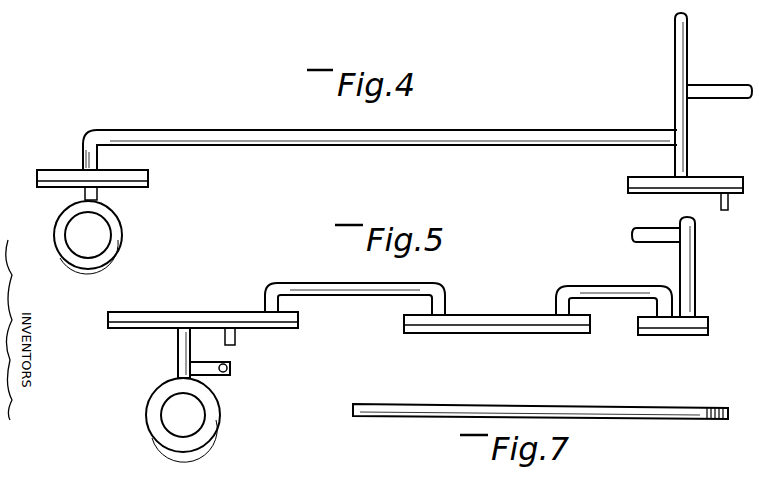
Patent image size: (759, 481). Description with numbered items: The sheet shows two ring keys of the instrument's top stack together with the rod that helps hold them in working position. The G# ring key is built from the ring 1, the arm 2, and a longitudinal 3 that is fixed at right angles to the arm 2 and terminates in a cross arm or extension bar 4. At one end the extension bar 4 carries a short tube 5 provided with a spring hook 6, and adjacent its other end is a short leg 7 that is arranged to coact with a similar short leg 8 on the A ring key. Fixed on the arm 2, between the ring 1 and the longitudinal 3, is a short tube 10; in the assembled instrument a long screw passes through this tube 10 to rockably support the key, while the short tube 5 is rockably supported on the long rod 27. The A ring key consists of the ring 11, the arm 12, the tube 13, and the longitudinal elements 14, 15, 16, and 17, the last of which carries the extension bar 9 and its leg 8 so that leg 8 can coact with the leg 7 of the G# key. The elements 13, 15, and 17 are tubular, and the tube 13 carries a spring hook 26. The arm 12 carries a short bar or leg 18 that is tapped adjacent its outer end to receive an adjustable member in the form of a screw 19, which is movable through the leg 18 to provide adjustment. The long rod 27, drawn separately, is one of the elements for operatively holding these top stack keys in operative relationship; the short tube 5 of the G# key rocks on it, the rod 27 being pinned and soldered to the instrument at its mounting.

In FIG. 4, the ring 1 is at (121, 243).
In FIG. 4, the arm 2 is at (84, 158).
In FIG. 4, the longitudinal 3 is at (340, 140).
In FIG. 4, the cross arm or extension bar 4 is at (680, 52).
In FIG. 4, the short tube 5 is at (717, 182).
In FIG. 4, the spring hook 6 is at (725, 209).
In FIG. 4, the short leg 7 is at (707, 89).
In FIG. 5, the short leg 8 is at (645, 233).
In FIG. 5, the extension bar 9 is at (696, 279).
In FIG. 4, the short tube 10 is at (49, 187).
In FIG. 5, the ring 11 is at (214, 436).
In FIG. 5, the arm 12 is at (178, 355).
In FIG. 5, the tube 13 is at (203, 305).
In FIG. 5, the longitudinal element 14 is at (332, 296).
In FIG. 5, the longitudinal element 15 is at (492, 326).
In FIG. 5, the longitudinal element 16 is at (612, 272).
In FIG. 5, the longitudinal element 17 is at (680, 326).
In FIG. 5, the short bar or leg 18 is at (212, 375).
In FIG. 5, the screw 19 is at (228, 370).
In FIG. 5, the spring hook 26 is at (236, 342).
In FIG. 7, the long rod 27 is at (595, 412).